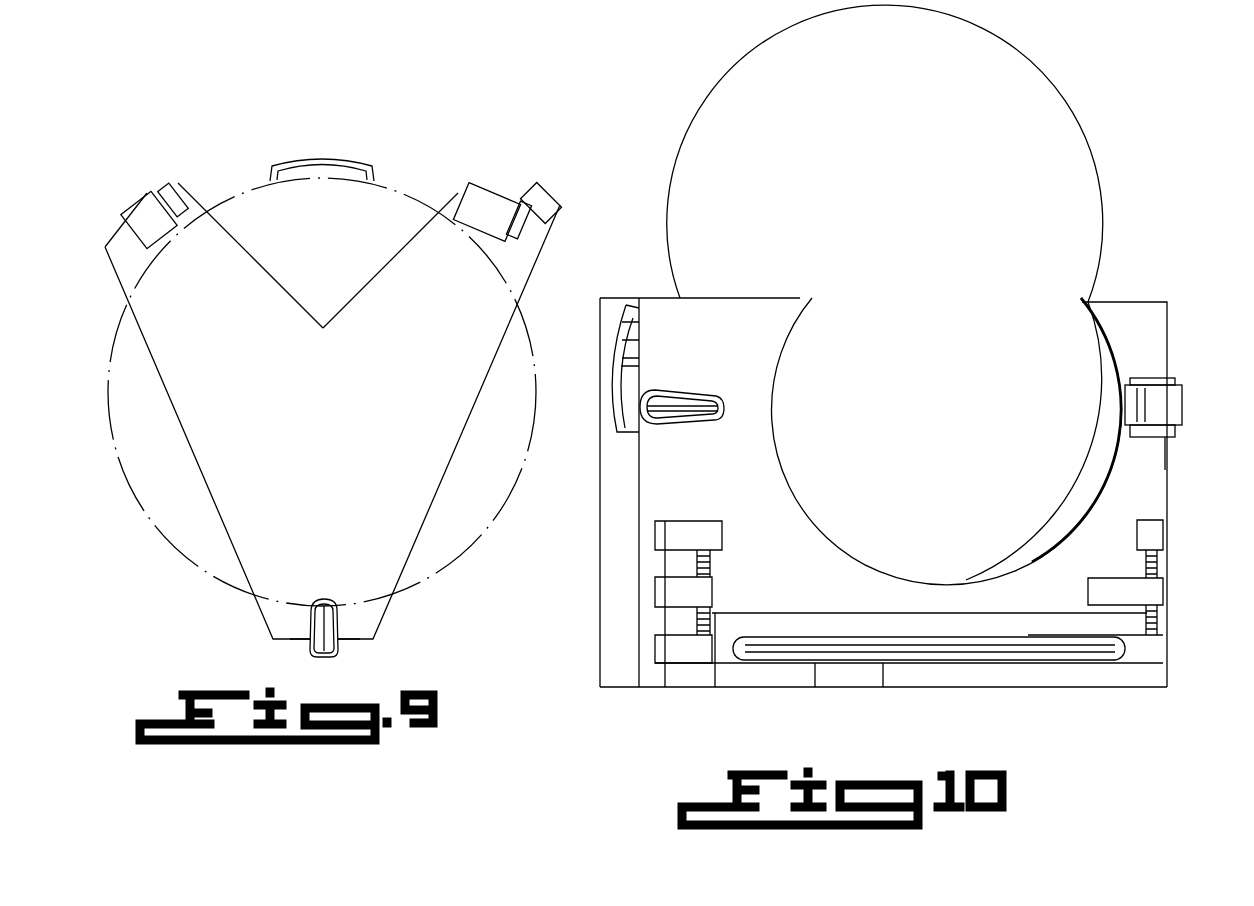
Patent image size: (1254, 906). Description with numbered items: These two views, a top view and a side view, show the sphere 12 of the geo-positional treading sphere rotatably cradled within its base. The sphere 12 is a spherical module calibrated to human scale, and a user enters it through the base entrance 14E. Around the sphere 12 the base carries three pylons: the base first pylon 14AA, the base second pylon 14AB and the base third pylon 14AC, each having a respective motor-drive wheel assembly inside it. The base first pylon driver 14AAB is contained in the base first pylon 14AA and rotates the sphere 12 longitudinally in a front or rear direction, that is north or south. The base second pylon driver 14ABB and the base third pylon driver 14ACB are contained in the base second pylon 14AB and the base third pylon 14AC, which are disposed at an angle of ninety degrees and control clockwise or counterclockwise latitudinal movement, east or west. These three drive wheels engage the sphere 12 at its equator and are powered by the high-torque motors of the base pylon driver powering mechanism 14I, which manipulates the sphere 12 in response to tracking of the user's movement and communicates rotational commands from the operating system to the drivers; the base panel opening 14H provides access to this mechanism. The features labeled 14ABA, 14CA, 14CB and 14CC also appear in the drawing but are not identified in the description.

In FIG. 9, the sphere 12 is at (413, 191).
In FIG. 10, the sphere 12 is at (904, 150).
In FIG. 9, the base first pylon 14AA is at (390, 647).
In FIG. 10, the base first pylon 14AA is at (1130, 296).
In FIG. 9, the base first pylon driver 14AAB is at (338, 657).
In FIG. 10, the base first pylon driver 14AAB is at (1182, 410).
In FIG. 9, the base second pylon 14AB is at (476, 181).
In FIG. 9, the mounting plate 14ABA is at (543, 233).
In FIG. 9, the base second pylon driver 14ABB is at (562, 204).
In FIG. 9, the base third pylon 14AC is at (190, 172).
In FIG. 10, the base third pylon 14AC is at (643, 299).
In FIG. 9, the base third pylon driver 14ACB is at (175, 205).
In FIG. 10, the base third pylon driver 14ACB is at (662, 418).
In FIG. 9, the right hopper wall 14CA is at (458, 440).
In FIG. 10, the right hopper wall 14CA is at (946, 441).
In FIG. 9, the center divider 14CB is at (323, 328).
In FIG. 9, the left hopper wall / base plate 14CC is at (203, 484).
In FIG. 10, the left hopper wall / base plate 14CC is at (897, 613).
In FIG. 9, the base entrance 14E is at (355, 162).
In FIG. 10, the base panel opening 14H is at (1083, 653).
In FIG. 10, the base pylon driver powering mechanism 14I is at (677, 588).